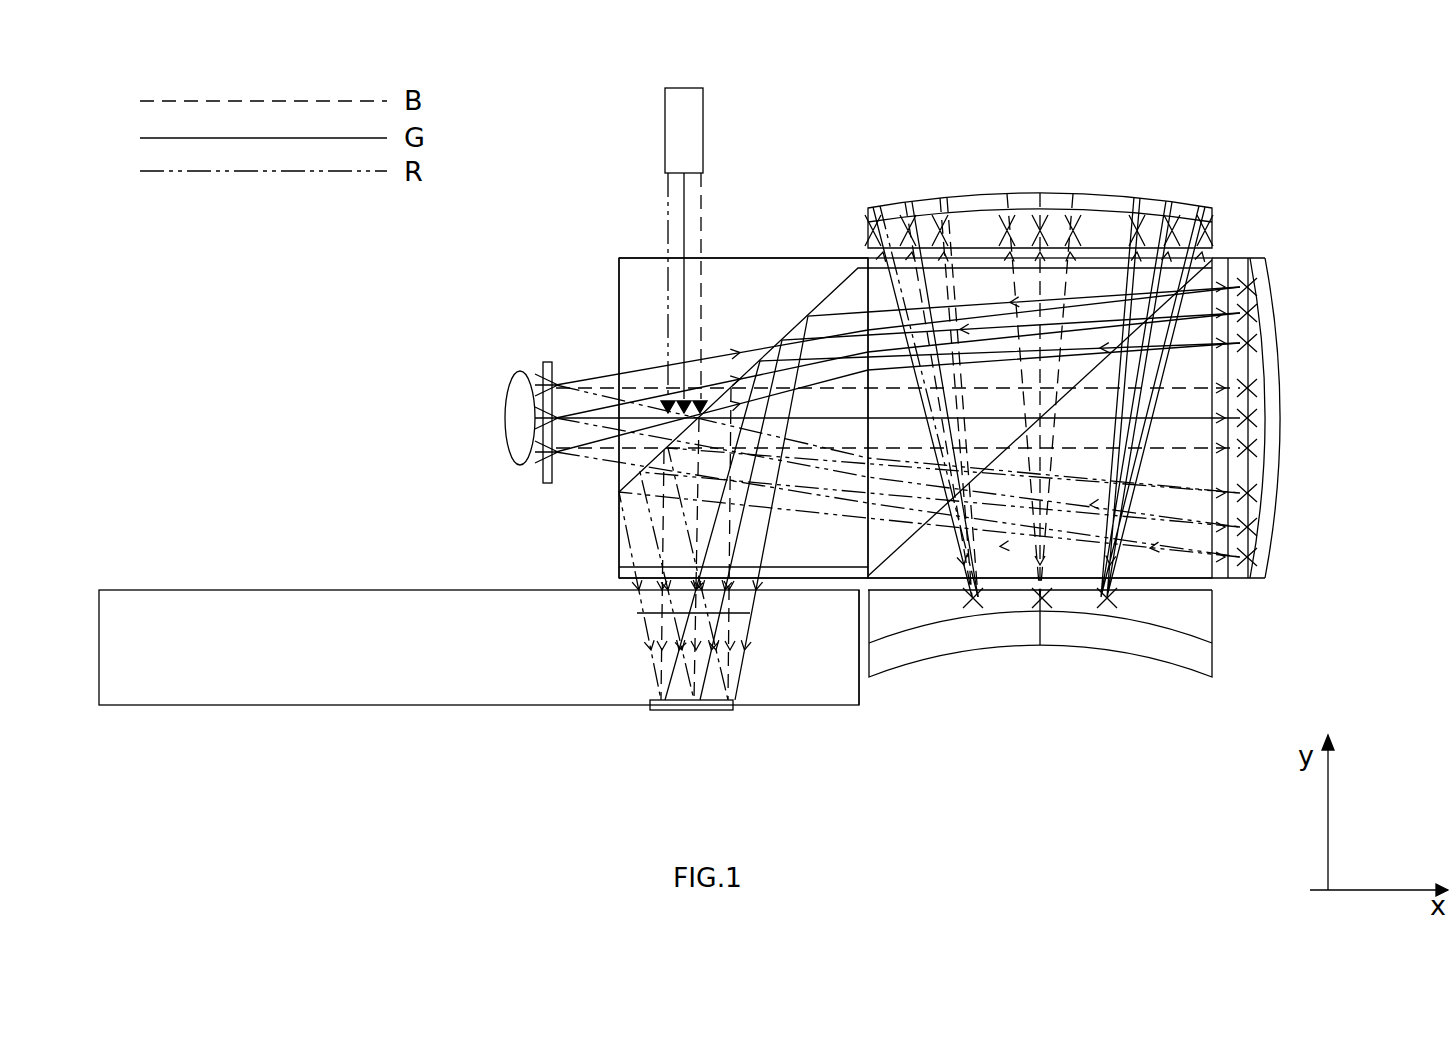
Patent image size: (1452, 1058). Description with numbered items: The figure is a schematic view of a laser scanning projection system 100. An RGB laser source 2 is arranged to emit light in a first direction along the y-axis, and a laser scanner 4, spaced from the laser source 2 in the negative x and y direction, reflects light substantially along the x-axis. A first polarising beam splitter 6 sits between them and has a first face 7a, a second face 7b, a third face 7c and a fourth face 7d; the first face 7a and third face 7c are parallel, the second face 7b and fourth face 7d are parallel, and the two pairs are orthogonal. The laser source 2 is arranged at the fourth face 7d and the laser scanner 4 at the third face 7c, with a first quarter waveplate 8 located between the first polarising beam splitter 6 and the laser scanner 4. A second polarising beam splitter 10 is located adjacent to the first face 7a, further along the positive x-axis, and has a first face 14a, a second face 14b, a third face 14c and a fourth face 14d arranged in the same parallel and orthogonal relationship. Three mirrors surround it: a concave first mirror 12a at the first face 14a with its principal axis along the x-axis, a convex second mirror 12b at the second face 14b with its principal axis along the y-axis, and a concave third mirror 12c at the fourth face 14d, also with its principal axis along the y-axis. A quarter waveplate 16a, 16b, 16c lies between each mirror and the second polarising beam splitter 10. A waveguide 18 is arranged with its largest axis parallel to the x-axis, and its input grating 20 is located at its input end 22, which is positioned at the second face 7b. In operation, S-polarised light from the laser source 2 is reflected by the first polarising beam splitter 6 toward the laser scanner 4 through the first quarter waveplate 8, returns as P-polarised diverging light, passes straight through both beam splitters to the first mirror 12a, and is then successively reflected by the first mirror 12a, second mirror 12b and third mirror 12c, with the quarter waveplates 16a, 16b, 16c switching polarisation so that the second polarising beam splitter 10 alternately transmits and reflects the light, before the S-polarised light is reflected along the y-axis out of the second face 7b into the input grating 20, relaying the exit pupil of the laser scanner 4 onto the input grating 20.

The RGB laser source 2 is at (678, 112).
The laser scanner 4 is at (518, 430).
The first polarising beam splitter 6 is at (735, 257).
The first face 7a is at (868, 302).
The second face 7b is at (623, 581).
The third face 7c is at (618, 317).
The fourth face 7d is at (643, 258).
The first quarter waveplate 8 is at (545, 360).
The second polarising beam splitter 10 is at (1198, 212).
The first mirror 12a is at (1268, 513).
The second mirror 12b is at (1158, 645).
The third mirror 12c is at (1162, 207).
The first face 14a is at (1210, 265).
The second face 14b is at (1173, 576).
The third face 14c is at (870, 302).
The fourth face 14d is at (976, 263).
The quarter waveplate 16a is at (1228, 312).
The quarter waveplate 16b is at (937, 590).
The quarter waveplate 16c is at (1110, 247).
The waveguide 18 is at (448, 695).
The input grating 20 is at (712, 710).
The input end 22 is at (795, 705).
The laser scanning projection system 100 is at (1328, 93).